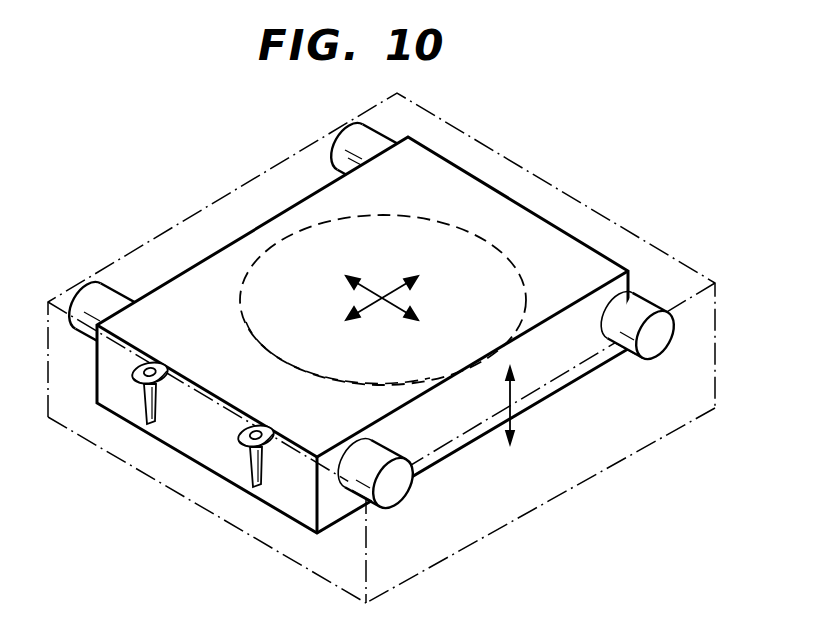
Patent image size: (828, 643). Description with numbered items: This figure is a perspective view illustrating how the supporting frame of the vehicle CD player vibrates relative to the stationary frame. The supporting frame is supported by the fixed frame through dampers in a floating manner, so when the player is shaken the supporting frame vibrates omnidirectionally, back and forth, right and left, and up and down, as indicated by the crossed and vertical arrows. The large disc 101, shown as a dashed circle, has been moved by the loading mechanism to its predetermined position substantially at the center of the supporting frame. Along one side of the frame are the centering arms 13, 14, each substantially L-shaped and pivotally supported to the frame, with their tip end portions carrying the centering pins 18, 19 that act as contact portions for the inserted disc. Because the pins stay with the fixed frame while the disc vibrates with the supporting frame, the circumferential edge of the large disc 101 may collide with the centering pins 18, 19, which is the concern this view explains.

The centering arm 13 is at (240, 443).
The centering arm 14 is at (137, 387).
The centering pin 18 is at (254, 485).
The centering pin 19 is at (143, 419).
The disc 101 is at (494, 262).